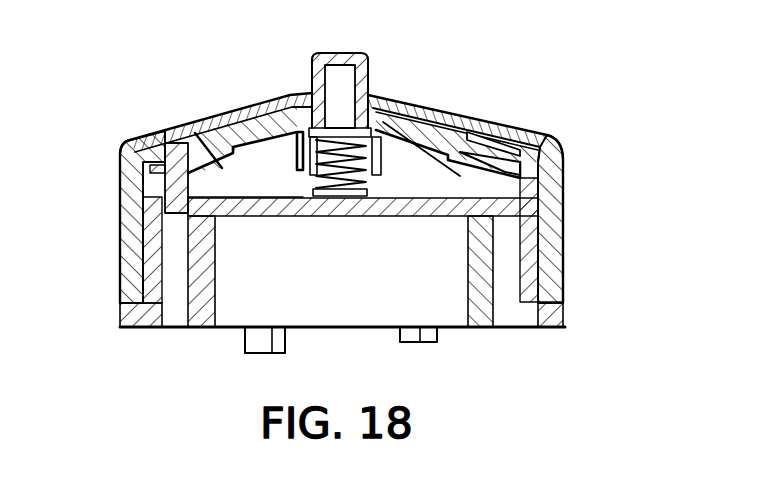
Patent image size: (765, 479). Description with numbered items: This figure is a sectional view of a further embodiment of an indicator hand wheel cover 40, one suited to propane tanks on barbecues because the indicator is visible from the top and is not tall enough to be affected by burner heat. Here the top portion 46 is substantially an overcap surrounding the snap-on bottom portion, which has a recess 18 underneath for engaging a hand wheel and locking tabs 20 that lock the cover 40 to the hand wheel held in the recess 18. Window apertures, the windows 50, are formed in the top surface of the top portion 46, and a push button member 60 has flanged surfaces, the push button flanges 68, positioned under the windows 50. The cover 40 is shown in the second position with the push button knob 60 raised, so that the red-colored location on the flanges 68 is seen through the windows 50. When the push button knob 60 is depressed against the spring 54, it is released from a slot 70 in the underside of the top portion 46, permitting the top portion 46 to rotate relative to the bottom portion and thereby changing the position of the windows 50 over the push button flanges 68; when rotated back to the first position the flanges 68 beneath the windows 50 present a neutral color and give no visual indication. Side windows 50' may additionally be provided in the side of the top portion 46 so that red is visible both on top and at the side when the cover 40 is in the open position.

The recess 18 is at (352, 293).
The locking tabs 20 is at (126, 320).
The indicator hand wheel cover 40 is at (266, 62).
The top portion 46 is at (560, 176).
The windows 50 is at (227, 112).
The side windows 50' is at (340, 240).
The spring 54 is at (406, 126).
The push button member 60 is at (371, 68).
The push button flanges 68 is at (252, 147).
The slot 70 is at (165, 140).